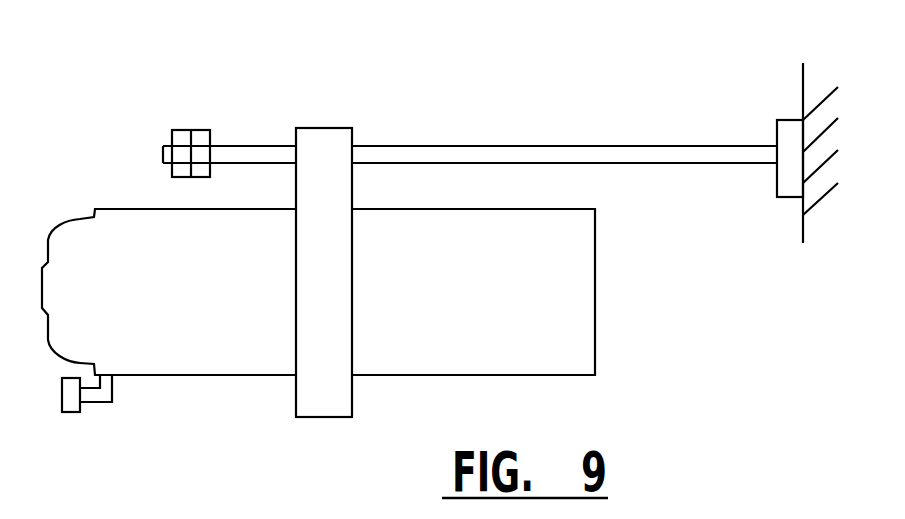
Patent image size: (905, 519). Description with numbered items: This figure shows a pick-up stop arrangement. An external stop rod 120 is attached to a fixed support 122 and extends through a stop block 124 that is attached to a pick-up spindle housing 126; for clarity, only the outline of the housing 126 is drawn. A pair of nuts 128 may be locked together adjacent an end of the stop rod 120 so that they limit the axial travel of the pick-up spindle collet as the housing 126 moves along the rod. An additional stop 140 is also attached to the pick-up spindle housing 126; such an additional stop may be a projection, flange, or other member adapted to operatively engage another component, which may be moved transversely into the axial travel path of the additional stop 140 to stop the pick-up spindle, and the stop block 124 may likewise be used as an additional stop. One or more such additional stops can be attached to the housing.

The external stop rod 120 is at (532, 145).
The fixed support 122 is at (792, 120).
The stop block 124 is at (337, 128).
The pick-up spindle housing 126 is at (595, 290).
The nuts 128 is at (190, 130).
The additional stop 140 is at (67, 412).